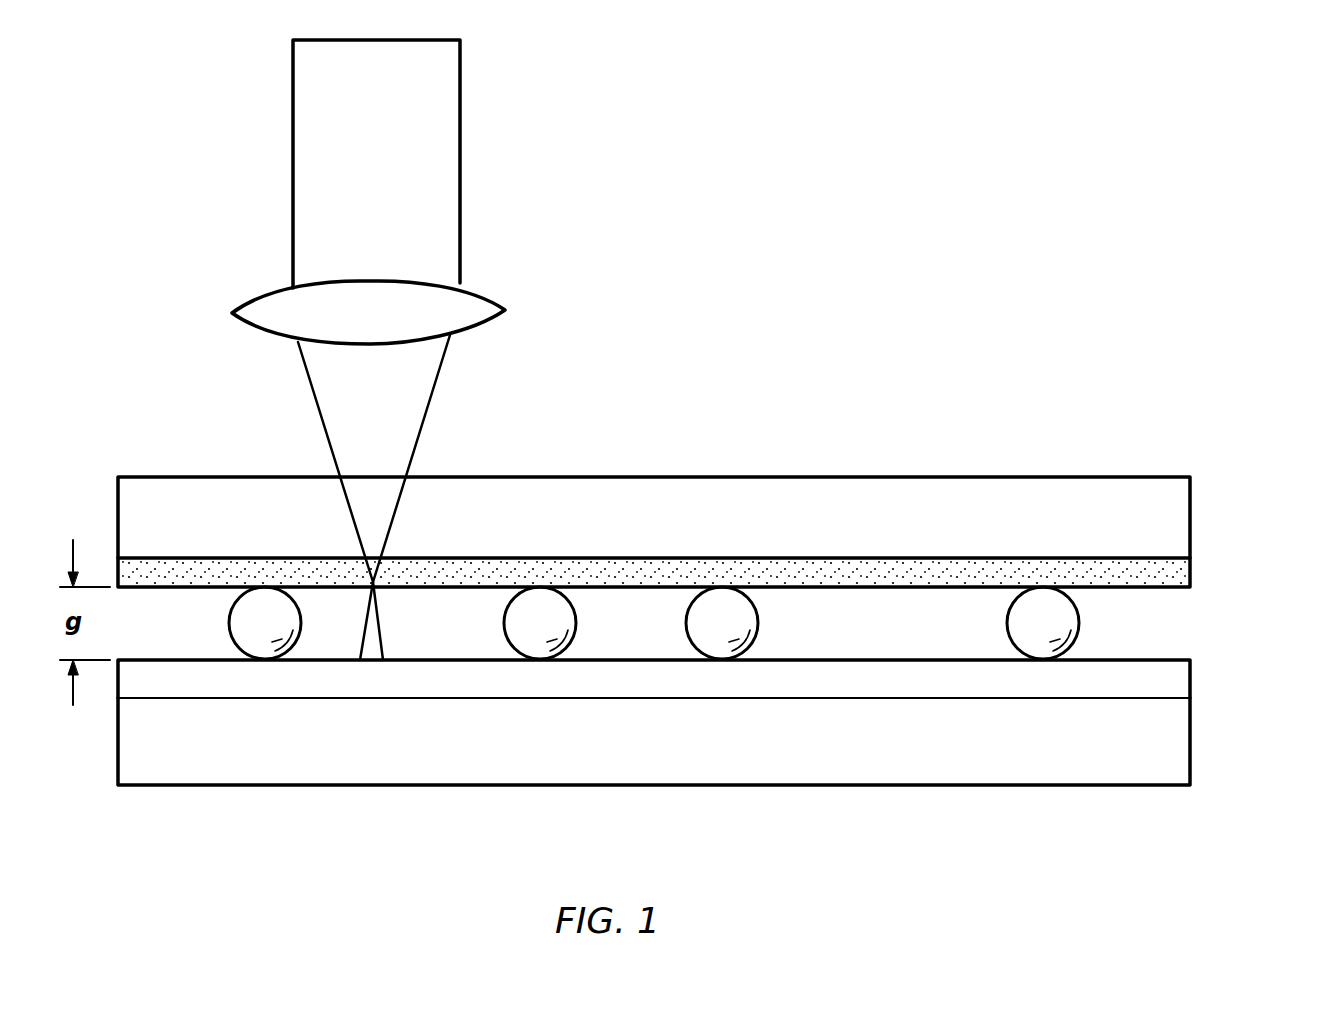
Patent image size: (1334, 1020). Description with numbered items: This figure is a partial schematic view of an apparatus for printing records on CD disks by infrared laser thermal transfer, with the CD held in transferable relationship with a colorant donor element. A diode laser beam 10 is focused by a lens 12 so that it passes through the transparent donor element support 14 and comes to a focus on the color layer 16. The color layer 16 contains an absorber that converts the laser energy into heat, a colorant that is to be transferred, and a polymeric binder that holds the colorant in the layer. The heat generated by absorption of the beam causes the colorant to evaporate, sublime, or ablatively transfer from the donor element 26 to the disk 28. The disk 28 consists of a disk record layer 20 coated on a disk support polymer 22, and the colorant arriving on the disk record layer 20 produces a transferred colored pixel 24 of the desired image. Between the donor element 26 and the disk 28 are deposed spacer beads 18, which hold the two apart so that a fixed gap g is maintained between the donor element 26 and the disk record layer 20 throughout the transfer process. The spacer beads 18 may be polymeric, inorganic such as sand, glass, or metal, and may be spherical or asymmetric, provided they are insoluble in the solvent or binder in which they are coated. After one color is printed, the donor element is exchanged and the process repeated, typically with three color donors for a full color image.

The diode laser beam 10 is at (437, 153).
The lens 12 is at (490, 300).
The transparent donor element support 14 is at (713, 500).
The color layer 16 is at (937, 565).
The spacer beads 18 is at (703, 622).
The disk record layer 20 is at (693, 680).
The disk support polymer 22 is at (397, 765).
The transferred colored pixel 24 is at (367, 662).
The donor element 26 is at (719, 503).
The disk 28 is at (719, 751).